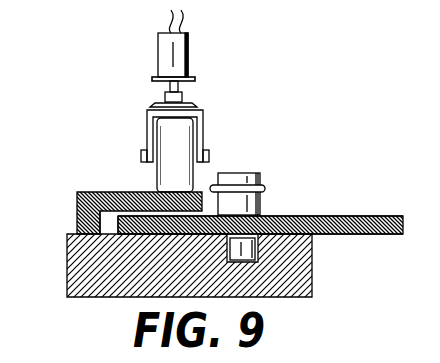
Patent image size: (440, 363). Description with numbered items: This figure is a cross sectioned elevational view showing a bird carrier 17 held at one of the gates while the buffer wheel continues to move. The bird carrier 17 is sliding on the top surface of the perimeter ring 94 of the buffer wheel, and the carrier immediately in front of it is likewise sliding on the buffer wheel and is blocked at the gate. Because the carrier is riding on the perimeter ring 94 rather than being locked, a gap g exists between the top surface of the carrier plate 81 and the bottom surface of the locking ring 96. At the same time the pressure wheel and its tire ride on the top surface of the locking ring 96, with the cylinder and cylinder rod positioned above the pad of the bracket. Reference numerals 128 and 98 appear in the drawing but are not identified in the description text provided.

The roller and heater assembly 128 is at (272, 86).
The locking ring 96 is at (95, 192).
The groove 98 is at (105, 223).
The bird carrier 17 is at (371, 215).
The carrier plate 81 is at (278, 214).
The perimeter ring 94 is at (105, 296).
The gap g is at (207, 213).